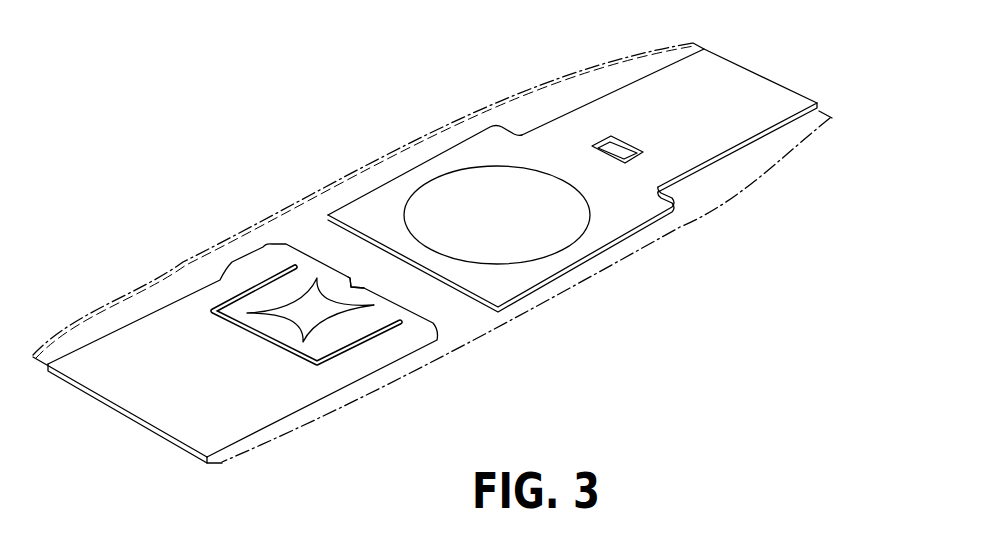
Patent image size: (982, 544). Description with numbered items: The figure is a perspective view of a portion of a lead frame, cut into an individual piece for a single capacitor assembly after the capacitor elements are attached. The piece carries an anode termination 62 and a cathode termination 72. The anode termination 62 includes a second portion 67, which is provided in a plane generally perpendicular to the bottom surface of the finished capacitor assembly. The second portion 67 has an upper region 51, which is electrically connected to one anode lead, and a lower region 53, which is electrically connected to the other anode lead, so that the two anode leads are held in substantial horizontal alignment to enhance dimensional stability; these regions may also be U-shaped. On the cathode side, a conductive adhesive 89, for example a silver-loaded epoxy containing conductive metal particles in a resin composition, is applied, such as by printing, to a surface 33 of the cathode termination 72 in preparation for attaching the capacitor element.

The surface 33 is at (632, 216).
The upper region 51 is at (360, 288).
The lower region 53 is at (273, 329).
The anode termination 62 is at (138, 357).
The second portion 67 is at (289, 293).
The cathode termination 72 is at (724, 97).
The conductive adhesive 89 is at (506, 187).